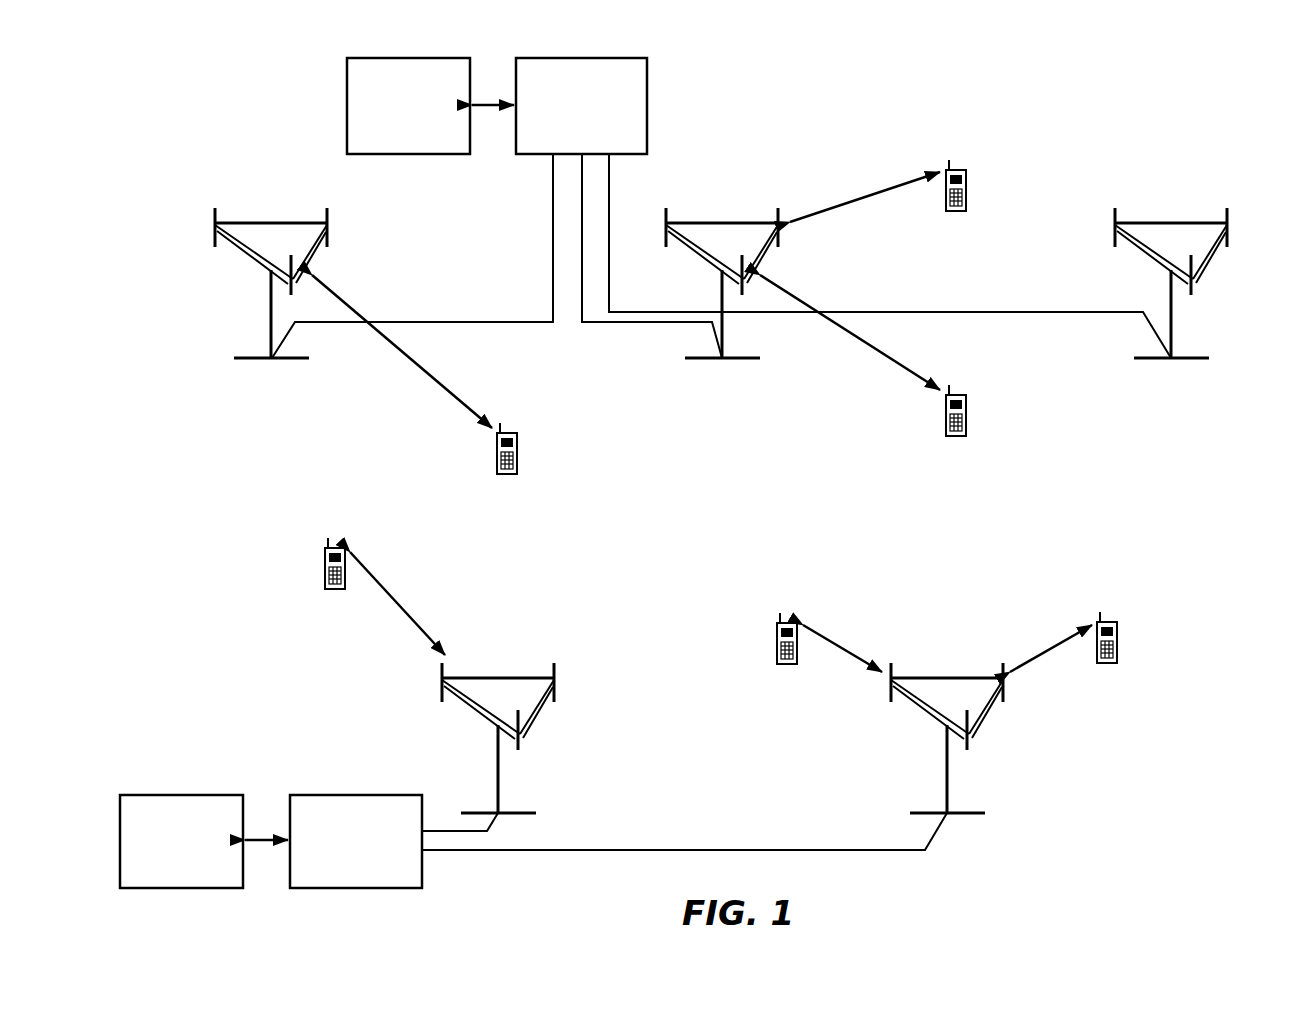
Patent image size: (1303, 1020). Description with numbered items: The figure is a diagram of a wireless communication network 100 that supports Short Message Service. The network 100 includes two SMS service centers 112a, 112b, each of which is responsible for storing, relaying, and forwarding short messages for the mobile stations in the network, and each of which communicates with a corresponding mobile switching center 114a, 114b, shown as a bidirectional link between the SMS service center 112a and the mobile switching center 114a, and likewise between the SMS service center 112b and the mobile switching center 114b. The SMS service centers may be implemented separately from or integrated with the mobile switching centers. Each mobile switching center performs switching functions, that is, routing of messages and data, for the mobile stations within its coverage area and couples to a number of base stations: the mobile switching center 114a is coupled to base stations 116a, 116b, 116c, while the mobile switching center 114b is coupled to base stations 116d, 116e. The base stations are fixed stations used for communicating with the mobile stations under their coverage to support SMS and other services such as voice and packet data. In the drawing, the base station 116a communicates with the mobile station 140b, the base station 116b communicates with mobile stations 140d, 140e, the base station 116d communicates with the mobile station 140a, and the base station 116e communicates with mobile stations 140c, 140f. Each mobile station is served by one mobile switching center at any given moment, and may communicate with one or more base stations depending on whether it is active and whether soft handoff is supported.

The wireless communication network 100 is at (1220, 68).
The SMS service center 112a is at (402, 58).
The SMS service center 112b is at (186, 781).
The mobile switching center 114a is at (575, 58).
The mobile switching center 114b is at (360, 781).
The base station 116a is at (284, 206).
The base station 116b is at (735, 206).
The base station 116c is at (1184, 206).
The base station 116d is at (510, 661).
The base station 116e is at (958, 661).
The mobile station 140a is at (332, 546).
The mobile station 140b is at (520, 418).
The mobile station 140c is at (784, 621).
The mobile station 140d is at (968, 155).
The mobile station 140e is at (968, 381).
The mobile station 140f is at (1120, 608).